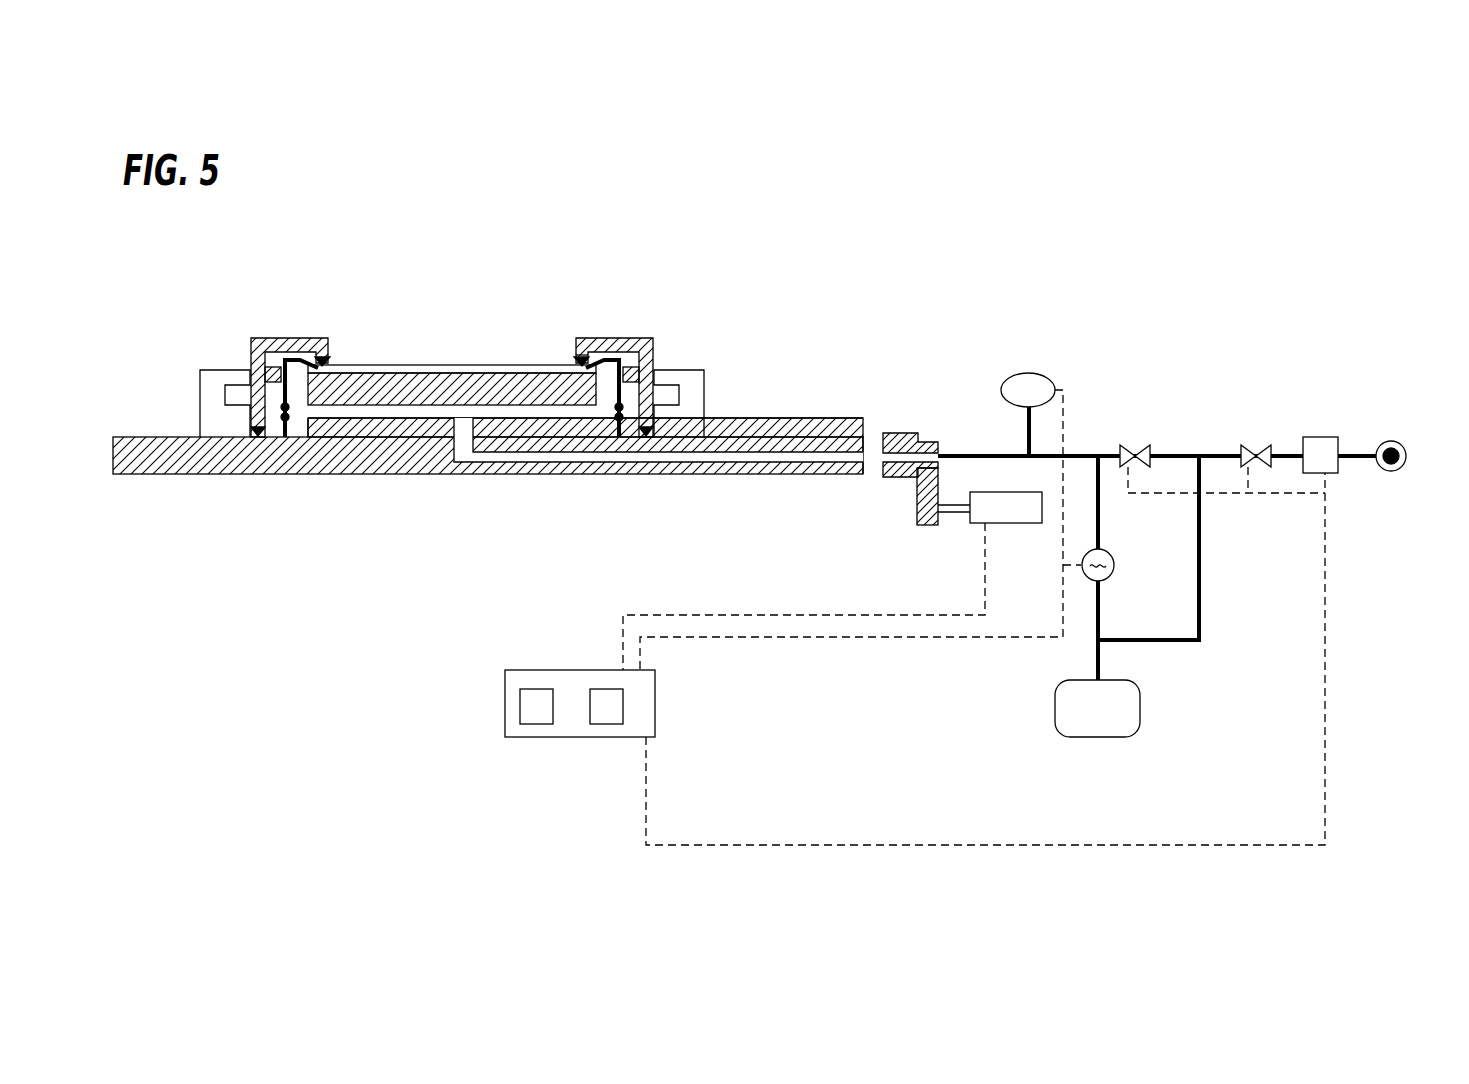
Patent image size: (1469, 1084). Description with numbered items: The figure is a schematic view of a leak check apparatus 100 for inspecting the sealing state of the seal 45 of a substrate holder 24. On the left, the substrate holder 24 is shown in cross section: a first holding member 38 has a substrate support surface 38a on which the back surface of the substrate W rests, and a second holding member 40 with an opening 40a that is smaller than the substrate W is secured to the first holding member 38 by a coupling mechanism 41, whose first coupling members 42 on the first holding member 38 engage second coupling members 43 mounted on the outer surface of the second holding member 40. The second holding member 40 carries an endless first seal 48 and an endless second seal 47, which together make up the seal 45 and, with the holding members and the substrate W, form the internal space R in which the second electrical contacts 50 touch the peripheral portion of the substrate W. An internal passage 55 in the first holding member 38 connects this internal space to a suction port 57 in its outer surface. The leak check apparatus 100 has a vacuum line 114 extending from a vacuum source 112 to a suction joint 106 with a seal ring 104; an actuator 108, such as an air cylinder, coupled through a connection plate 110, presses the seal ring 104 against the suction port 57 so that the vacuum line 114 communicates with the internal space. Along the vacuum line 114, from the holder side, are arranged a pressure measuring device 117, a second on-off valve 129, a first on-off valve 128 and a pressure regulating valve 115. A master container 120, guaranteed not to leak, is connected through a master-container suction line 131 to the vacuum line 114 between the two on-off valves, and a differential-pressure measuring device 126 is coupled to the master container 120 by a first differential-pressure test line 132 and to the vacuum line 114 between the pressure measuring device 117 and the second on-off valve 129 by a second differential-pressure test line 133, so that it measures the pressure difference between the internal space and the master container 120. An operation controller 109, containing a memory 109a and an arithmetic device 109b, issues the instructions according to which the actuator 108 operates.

The substrate holder 24 is at (425, 480).
The first holding member 38 is at (810, 436).
The substrate support surface 38a is at (505, 373).
The second holding member 40 is at (656, 352).
The opening 40a is at (572, 356).
The coupling mechanism 41 is at (439, 366).
The first coupling member 42 is at (200, 386).
The second coupling member 43 is at (247, 442).
The seal 45 is at (263, 440).
The second seal 47 is at (257, 438).
The first seal 48 is at (326, 360).
The second electrical contact 50 is at (298, 348).
The internal passage 55 is at (545, 463).
The suction port 57 is at (863, 463).
The leak check apparatus 100 is at (1143, 345).
The seal ring 104 is at (893, 433).
The suction joint 106 is at (921, 440).
The actuator 108 is at (1010, 525).
The operation controller 109 is at (621, 736).
The memory 109a is at (608, 724).
The arithmetic device 109b is at (538, 724).
The connection plate 110 is at (921, 528).
The vacuum source 112 is at (1401, 470).
The vacuum line 114 is at (1213, 454).
The pressure regulating valve 115 is at (1320, 437).
The pressure measuring device 117 is at (1030, 373).
The master container 120 is at (1090, 740).
The differential-pressure measuring device 126 is at (1113, 570).
The first on-off valve 128 is at (1250, 446).
The second on-off valve 129 is at (1130, 446).
The master-container suction line 131 is at (1200, 600).
The first differential-pressure test line 132 is at (1099, 620).
The second differential-pressure test line 133 is at (1099, 535).
The substrate W is at (466, 364).